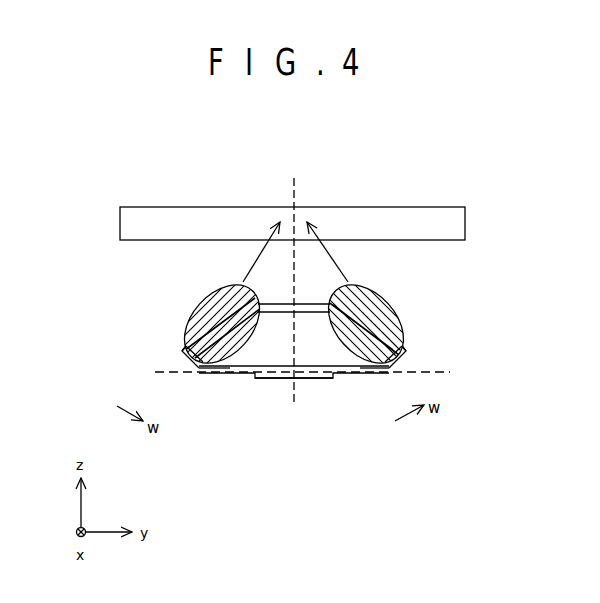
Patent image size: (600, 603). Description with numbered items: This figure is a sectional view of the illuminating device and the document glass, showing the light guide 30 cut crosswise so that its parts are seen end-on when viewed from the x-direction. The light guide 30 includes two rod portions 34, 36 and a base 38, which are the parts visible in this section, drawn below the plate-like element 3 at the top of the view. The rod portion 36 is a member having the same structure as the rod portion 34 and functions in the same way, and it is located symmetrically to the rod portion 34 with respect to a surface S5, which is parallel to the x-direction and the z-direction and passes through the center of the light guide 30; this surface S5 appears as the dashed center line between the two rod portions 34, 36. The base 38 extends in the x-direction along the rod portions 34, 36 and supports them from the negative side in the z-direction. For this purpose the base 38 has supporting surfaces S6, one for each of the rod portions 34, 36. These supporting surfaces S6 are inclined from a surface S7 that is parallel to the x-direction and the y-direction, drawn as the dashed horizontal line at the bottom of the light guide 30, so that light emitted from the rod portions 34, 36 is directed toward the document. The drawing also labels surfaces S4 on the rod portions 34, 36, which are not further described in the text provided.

The detection target 3 is at (422, 210).
The light guide 30 is at (122, 265).
The rod portion 34 is at (190, 320).
The rod portion 36 is at (400, 300).
The base 38 is at (300, 379).
The inclined seat surface S4 is at (186, 345).
The surface S5 is at (295, 192).
The supporting surfaces S6 is at (197, 373).
The surface S7 is at (450, 372).